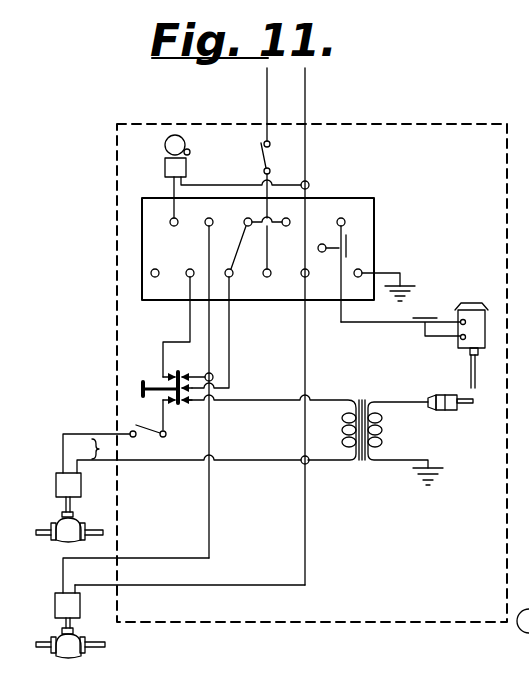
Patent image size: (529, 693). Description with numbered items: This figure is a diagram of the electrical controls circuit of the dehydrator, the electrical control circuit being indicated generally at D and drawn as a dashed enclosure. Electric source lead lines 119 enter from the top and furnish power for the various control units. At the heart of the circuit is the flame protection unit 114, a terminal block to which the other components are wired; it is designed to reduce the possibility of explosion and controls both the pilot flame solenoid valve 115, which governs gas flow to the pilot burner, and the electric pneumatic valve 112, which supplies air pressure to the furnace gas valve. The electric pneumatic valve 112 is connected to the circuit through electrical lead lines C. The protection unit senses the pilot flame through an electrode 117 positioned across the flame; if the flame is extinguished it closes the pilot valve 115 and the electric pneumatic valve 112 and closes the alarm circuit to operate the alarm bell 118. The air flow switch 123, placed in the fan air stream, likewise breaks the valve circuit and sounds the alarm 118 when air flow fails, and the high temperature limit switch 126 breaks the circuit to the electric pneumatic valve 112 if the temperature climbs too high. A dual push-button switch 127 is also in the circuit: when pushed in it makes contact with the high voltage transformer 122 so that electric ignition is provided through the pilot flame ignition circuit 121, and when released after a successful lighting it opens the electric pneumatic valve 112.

The electrical control circuit D is at (114, 243).
The electrical lead lines C is at (182, 453).
The electric source lead lines 119 is at (270, 92).
The alarm bell 118 is at (166, 146).
The air flow switch 123 is at (262, 158).
The flame protection unit 114 is at (357, 202).
The electrode 117 is at (478, 312).
The transformer 122 is at (372, 396).
The pilot flame ignition circuit 121 is at (437, 395).
The dual push-button switch 127 is at (155, 381).
The high temperature limit switch 126 is at (148, 436).
The electric pneumatic valve 112 is at (70, 528).
The pilot flame solenoid valve 115 is at (78, 646).